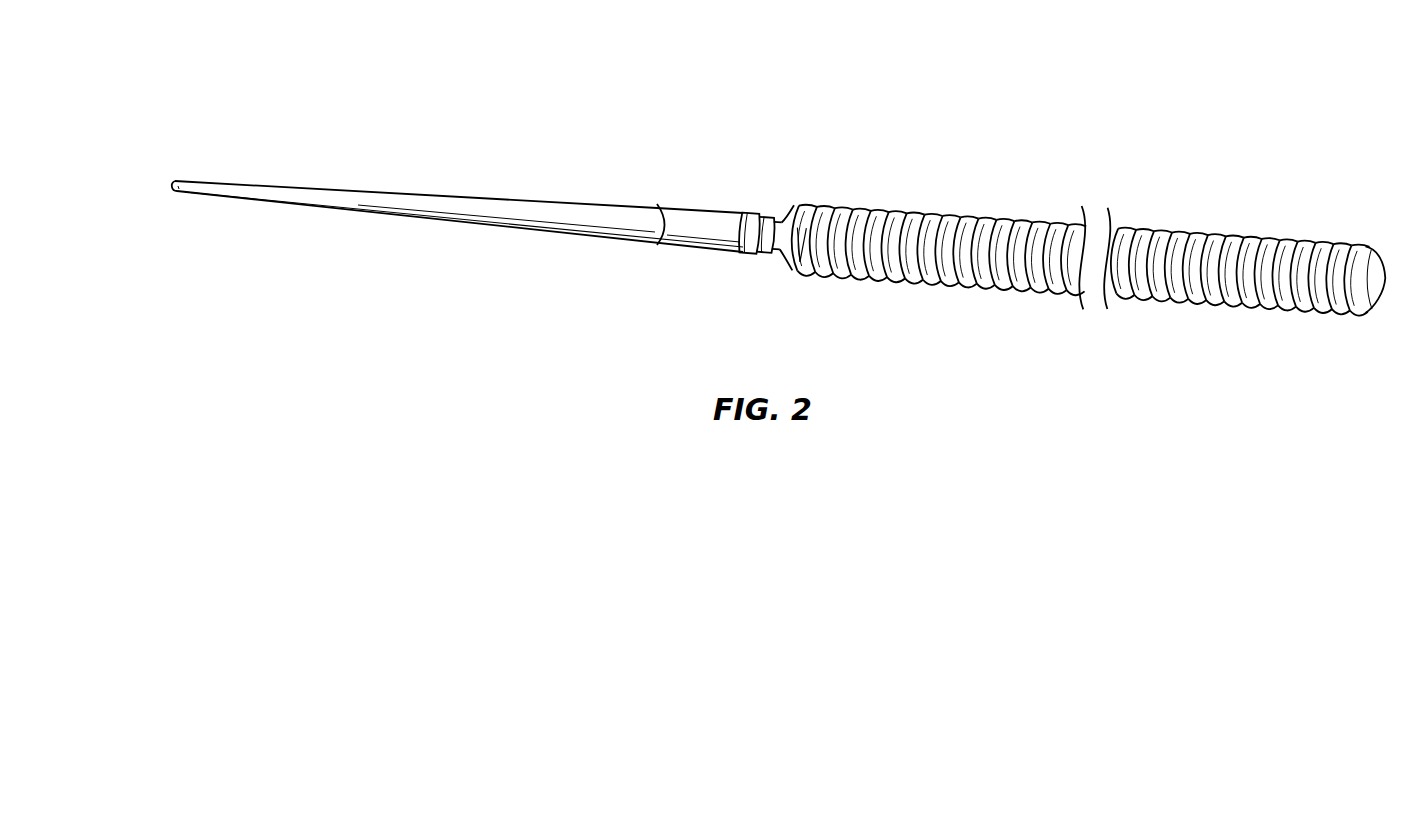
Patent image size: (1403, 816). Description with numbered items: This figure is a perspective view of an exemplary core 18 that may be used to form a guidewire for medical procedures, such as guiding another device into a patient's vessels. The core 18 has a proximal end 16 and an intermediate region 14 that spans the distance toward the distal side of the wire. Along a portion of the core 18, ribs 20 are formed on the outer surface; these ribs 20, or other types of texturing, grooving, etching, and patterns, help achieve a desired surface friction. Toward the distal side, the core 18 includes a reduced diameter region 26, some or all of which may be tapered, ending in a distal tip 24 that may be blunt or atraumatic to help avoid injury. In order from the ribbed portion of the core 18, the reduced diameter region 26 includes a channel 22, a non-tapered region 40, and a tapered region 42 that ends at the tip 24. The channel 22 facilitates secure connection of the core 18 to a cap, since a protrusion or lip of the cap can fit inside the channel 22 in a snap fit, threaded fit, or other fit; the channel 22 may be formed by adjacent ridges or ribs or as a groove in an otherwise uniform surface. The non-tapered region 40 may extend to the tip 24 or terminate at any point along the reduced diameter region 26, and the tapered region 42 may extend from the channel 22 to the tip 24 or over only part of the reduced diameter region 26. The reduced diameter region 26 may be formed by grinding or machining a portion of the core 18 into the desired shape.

The intermediate region 14 is at (1010, 203).
The proximal end 16 is at (1355, 333).
The core 18 is at (849, 147).
The ribs 20 is at (1322, 243).
The channel 22 is at (763, 213).
The distal tip 24 is at (167, 183).
The reduced diameter region 26 is at (163, 207).
The non-tapered region 40 is at (697, 213).
The tapered region 42 is at (435, 200).